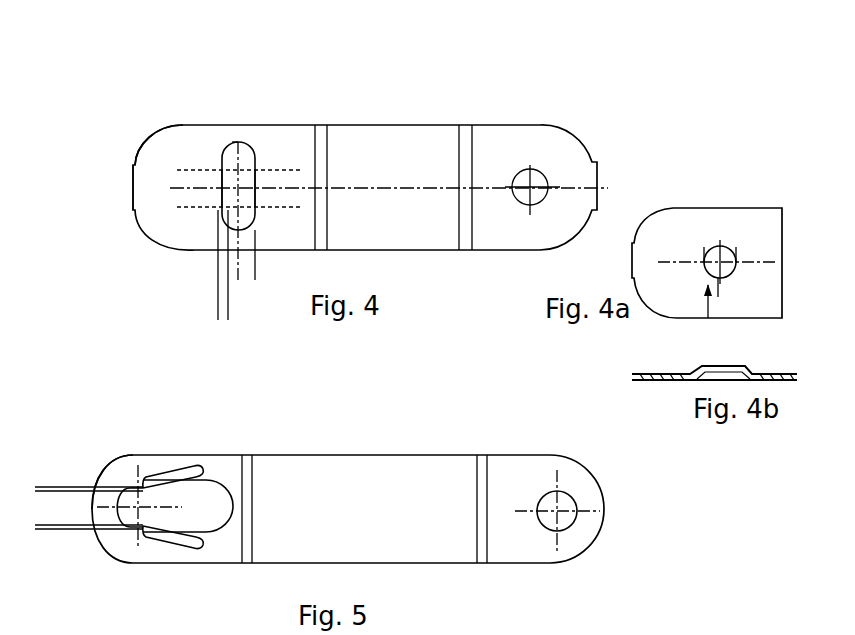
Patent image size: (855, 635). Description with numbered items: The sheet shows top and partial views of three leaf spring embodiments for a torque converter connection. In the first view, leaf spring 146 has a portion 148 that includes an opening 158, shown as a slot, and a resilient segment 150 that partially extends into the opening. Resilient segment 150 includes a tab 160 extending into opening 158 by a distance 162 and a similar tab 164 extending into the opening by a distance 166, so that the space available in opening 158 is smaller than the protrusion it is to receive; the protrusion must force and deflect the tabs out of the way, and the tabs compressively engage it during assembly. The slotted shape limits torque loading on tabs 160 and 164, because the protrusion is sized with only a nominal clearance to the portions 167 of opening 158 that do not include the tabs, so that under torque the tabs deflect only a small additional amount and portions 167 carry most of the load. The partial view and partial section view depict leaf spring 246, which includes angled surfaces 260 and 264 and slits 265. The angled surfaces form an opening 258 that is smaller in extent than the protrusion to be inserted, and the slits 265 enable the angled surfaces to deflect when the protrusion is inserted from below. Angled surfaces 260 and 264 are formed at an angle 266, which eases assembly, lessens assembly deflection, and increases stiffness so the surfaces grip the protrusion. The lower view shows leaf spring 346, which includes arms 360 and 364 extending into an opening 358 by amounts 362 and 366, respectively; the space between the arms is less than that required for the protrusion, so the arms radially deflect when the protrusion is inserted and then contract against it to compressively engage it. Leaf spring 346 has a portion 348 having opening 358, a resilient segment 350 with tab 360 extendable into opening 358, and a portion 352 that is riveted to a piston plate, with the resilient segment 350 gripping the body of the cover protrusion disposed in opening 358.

In FIG. 4, the leaf spring 146 is at (458, 95).
In FIG. 4, the portion 148 is at (156, 128).
In FIG. 4, the resilient segment 150 is at (190, 215).
In FIG. 4, the opening 158 is at (257, 128).
In FIG. 4, the tab 160 is at (262, 170).
In FIG. 4, the distance 162 is at (222, 267).
In FIG. 4, the tab 164 is at (222, 172).
In FIG. 4, the distance 166 is at (244, 309).
In FIG. 4, the portions of opening 167 is at (233, 142).
In FIG. 4A, the leaf spring 246 is at (703, 185).
In FIG. 4A, the opening 258 is at (718, 243).
In FIG. 4A, the angled surface 260 is at (735, 245).
In FIG. 4A, the angled surface 264 is at (703, 252).
In FIG. 4A, the slits 265 is at (718, 292).
In FIG. 4B, the angle 266 is at (796, 360).
In FIG. 5, the leaf spring 346 is at (373, 446).
In FIG. 5, the portion 348 is at (106, 450).
In FIG. 5, the resilient segment 350 is at (196, 454).
In FIG. 5, the portion 352 is at (540, 486).
In FIG. 5, the opening 358 is at (129, 529).
In FIG. 5, the arm 360 is at (192, 481).
In FIG. 5, the amount 362 is at (50, 503).
In FIG. 5, the arm 364 is at (190, 540).
In FIG. 5, the amount 366 is at (42, 505).